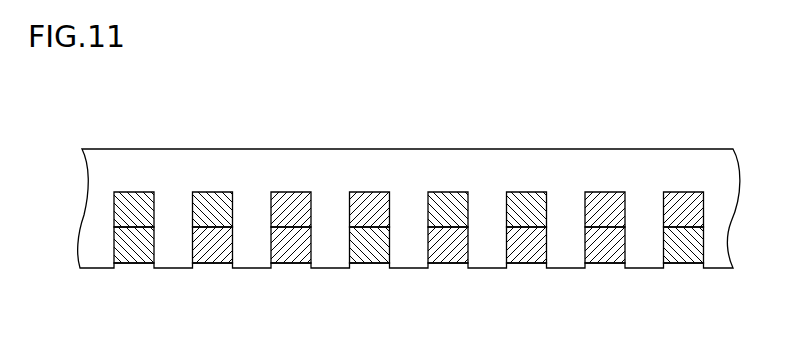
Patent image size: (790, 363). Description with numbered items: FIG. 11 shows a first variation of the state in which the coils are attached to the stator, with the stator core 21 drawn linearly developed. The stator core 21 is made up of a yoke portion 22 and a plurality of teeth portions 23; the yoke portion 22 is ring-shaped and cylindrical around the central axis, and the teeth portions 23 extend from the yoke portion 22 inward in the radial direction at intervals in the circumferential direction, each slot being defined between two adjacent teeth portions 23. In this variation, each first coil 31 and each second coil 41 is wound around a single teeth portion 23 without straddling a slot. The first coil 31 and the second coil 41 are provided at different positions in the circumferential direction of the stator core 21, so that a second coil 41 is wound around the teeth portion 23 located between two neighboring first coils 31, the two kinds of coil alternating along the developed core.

The stator core 21 is at (175, 149).
The yoke portion 22 is at (409, 163).
The teeth portion 23 is at (175, 270).
The first coil 31 is at (135, 207).
The second coil 41 is at (138, 240).